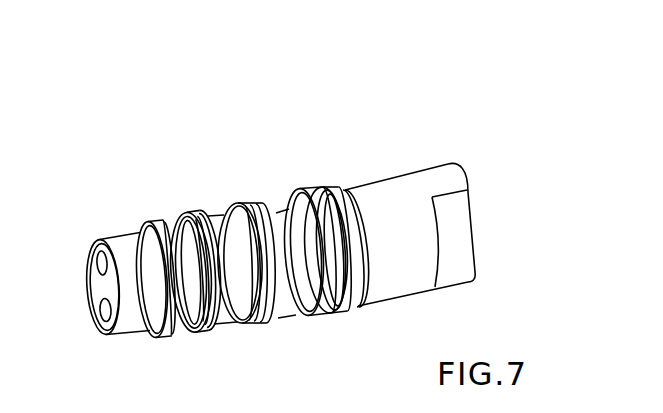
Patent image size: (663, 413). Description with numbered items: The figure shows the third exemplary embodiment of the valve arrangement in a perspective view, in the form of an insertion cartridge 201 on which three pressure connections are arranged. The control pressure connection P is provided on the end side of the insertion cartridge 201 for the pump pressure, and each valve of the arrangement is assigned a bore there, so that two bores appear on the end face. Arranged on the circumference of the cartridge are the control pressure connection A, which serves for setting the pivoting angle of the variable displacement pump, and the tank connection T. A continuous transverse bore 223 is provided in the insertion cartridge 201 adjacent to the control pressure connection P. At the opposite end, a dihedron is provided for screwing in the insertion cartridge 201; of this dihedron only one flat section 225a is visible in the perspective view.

The insertion cartridge 201 is at (275, 171).
The continuous transverse bore 223 is at (117, 237).
The flat section 225a is at (463, 237).
The control pressure connection A is at (154, 265).
The tank connection T is at (238, 255).
The control pressure connection P is at (89, 286).